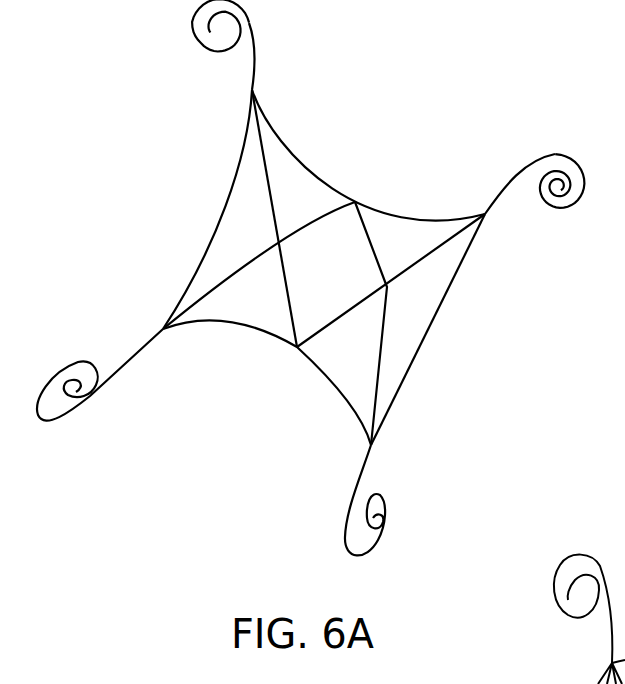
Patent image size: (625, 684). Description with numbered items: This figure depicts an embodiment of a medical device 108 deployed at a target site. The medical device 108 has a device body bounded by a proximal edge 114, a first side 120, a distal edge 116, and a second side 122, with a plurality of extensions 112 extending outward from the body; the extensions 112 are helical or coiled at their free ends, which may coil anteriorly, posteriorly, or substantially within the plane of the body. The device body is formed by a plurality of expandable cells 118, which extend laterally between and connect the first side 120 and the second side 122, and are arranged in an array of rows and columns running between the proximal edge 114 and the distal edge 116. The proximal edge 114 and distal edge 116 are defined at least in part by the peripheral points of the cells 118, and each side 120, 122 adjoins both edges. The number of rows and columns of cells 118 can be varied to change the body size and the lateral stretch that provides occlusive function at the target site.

The medical device 108 is at (98, 101).
The extensions 112 is at (563, 155).
The proximal edge 114 is at (228, 353).
The distal edge 116 is at (320, 137).
The expandable cells 118 is at (382, 352).
The first side 120 is at (218, 226).
The second side 122 is at (453, 287).